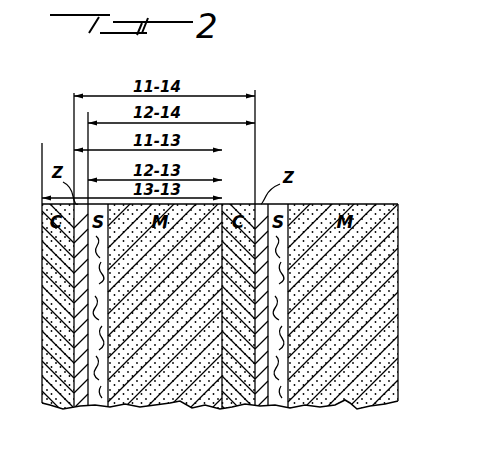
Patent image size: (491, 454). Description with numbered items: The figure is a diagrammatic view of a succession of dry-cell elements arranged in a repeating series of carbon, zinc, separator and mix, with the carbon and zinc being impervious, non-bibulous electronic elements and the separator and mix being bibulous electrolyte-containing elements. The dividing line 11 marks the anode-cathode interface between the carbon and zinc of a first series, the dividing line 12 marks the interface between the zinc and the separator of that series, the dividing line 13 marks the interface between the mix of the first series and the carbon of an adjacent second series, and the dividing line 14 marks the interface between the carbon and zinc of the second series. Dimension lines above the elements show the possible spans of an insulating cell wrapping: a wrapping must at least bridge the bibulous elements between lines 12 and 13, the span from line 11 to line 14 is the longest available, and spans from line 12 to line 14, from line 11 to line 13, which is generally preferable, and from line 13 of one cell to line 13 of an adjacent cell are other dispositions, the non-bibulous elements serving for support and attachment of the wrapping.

The dividing line between carbon and zinc elements of first series 11 is at (74, 93).
The dividing line between zinc and separator elements 12 is at (88, 112).
The dividing line between mix and carbon of adjacent series 13 is at (222, 204).
The dividing line between carbon and zinc of second series 14 is at (255, 90).